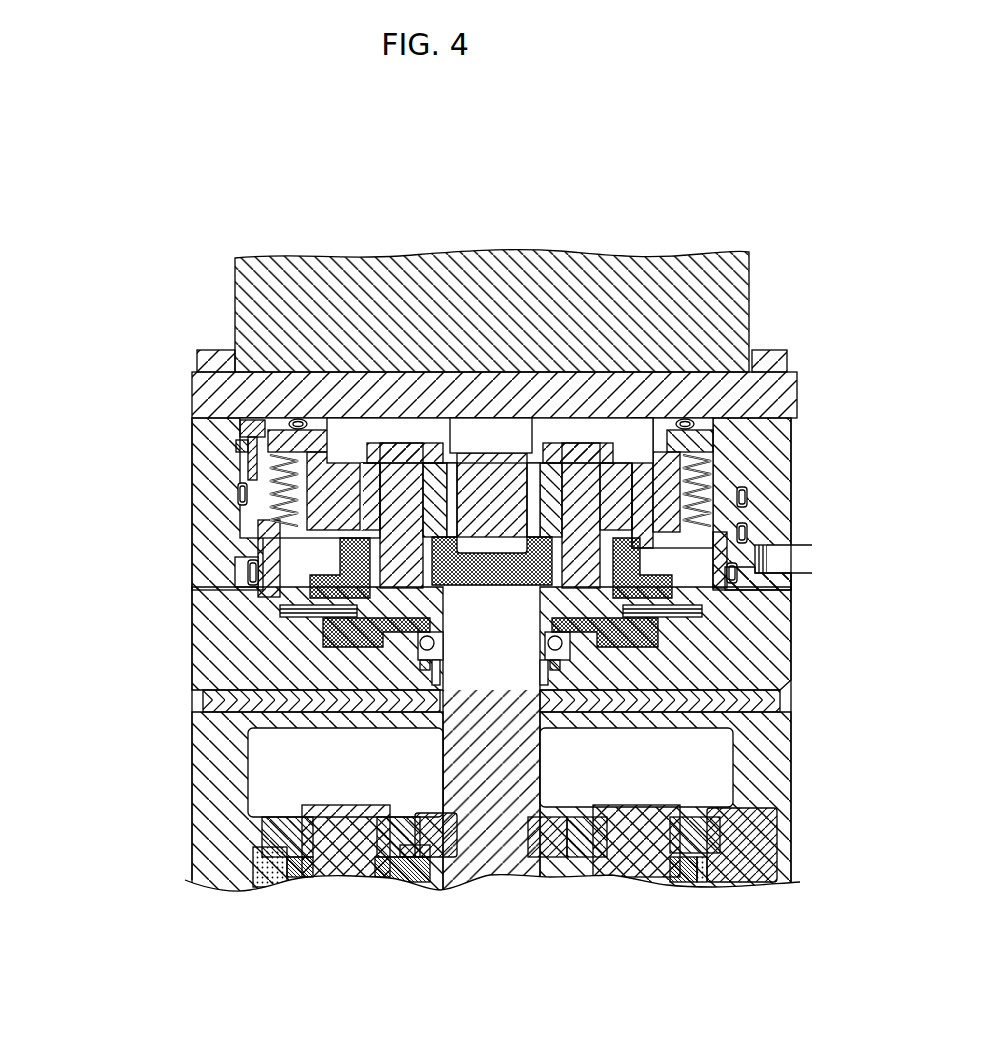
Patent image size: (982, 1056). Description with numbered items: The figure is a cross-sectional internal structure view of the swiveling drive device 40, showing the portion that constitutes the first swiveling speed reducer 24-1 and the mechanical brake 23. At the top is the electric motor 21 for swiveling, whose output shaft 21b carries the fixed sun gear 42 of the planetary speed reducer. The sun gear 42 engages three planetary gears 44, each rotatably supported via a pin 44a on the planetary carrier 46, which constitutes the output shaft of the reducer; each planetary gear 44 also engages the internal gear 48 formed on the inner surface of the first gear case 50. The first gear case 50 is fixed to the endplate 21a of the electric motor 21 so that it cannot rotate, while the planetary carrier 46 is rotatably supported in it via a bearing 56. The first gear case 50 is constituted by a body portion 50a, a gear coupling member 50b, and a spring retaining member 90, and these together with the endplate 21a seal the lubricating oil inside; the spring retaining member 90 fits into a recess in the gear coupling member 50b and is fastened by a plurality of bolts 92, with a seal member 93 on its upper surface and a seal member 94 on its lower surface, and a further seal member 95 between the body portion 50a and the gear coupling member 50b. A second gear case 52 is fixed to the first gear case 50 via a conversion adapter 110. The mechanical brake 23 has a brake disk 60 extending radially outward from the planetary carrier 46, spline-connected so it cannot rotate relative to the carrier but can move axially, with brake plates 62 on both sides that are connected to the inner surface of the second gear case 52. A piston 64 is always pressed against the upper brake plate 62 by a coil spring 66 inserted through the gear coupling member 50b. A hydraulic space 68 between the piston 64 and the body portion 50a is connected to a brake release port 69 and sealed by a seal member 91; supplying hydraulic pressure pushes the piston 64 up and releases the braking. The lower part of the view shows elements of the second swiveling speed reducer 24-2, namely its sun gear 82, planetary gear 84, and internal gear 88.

The swiveling drive device 40 is at (196, 186).
The electric motor for swiveling 21 is at (566, 290).
The endplate 21a is at (205, 395).
The output shaft 21b is at (493, 490).
The first swiveling speed reducer 24-1 is at (290, 143).
The sun gear 42 is at (450, 477).
The pin 44a is at (403, 453).
The planetary gear 44 is at (362, 463).
The internal gear 48 is at (340, 430).
The seal member 93 is at (295, 418).
The spring retaining member 90 is at (262, 418).
The seal member 94 is at (255, 430).
The bolt 92 is at (249, 437).
The first gear case 50 is at (68, 438).
The gear coupling member 50b is at (200, 462).
The body portion 50a is at (205, 490).
The spring 66 is at (250, 492).
The piston 64 is at (248, 527).
The mechanical brake 23 is at (125, 578).
The brake plate 62 is at (315, 612).
The brake disk 60 is at (345, 618).
The conversion adapter 110 is at (205, 700).
The second gear case 52 is at (200, 797).
The planetary carrier 46 is at (498, 852).
The bearing 56 is at (412, 850).
The second swiveling speed reducer 24-2 is at (249, 920).
The internal gear 88 is at (276, 868).
The planetary gear 84 is at (298, 875).
The sun gear 82 is at (430, 875).
The seal member 95 is at (745, 495).
The seal member 91 is at (745, 530).
The brake release port 69 is at (778, 560).
The hydraulic space 68 is at (745, 578).